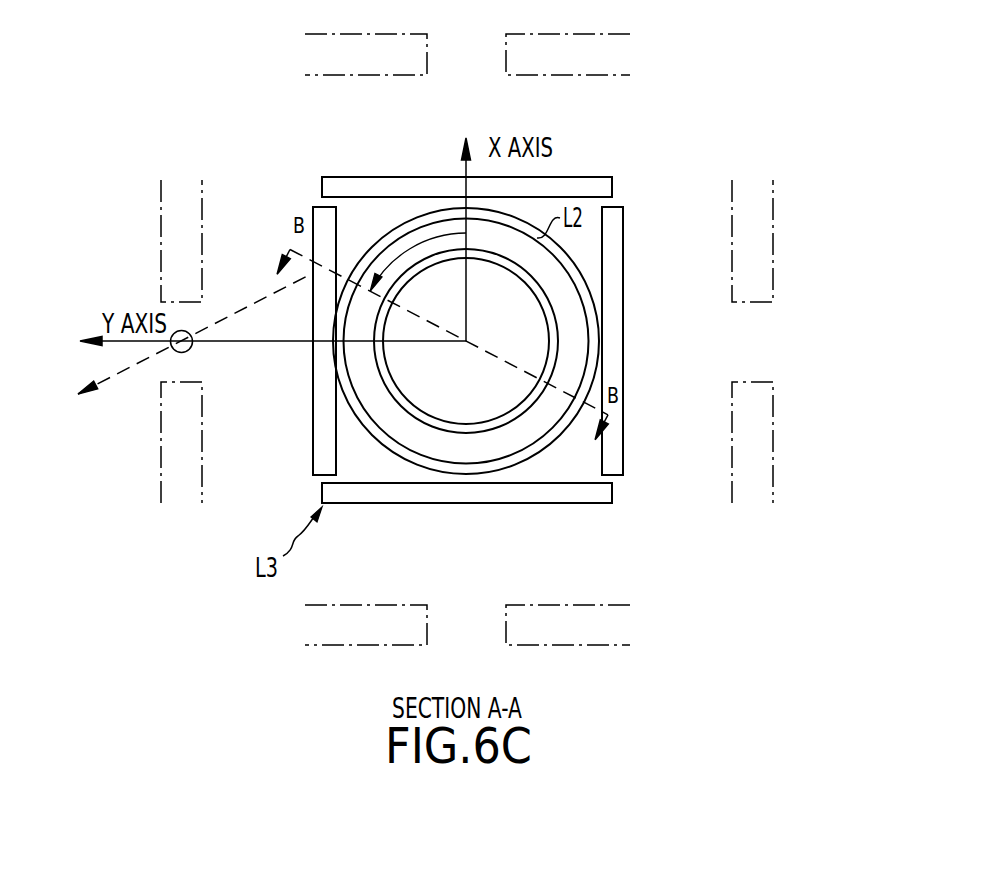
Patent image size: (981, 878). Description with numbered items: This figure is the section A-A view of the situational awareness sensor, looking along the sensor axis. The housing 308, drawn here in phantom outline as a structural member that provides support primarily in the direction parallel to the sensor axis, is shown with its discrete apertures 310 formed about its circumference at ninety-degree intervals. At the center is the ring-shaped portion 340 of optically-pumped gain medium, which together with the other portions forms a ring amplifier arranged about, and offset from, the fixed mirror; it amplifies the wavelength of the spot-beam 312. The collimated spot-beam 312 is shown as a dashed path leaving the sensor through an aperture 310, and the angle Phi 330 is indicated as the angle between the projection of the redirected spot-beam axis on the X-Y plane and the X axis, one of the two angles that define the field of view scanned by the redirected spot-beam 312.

The housing 308 is at (160, 458).
The aperture 310 is at (148, 376).
The spot-beam 312 is at (189, 350).
The Phi 330 is at (407, 252).
The portion of optically-pumped gain medium 340 is at (571, 268).